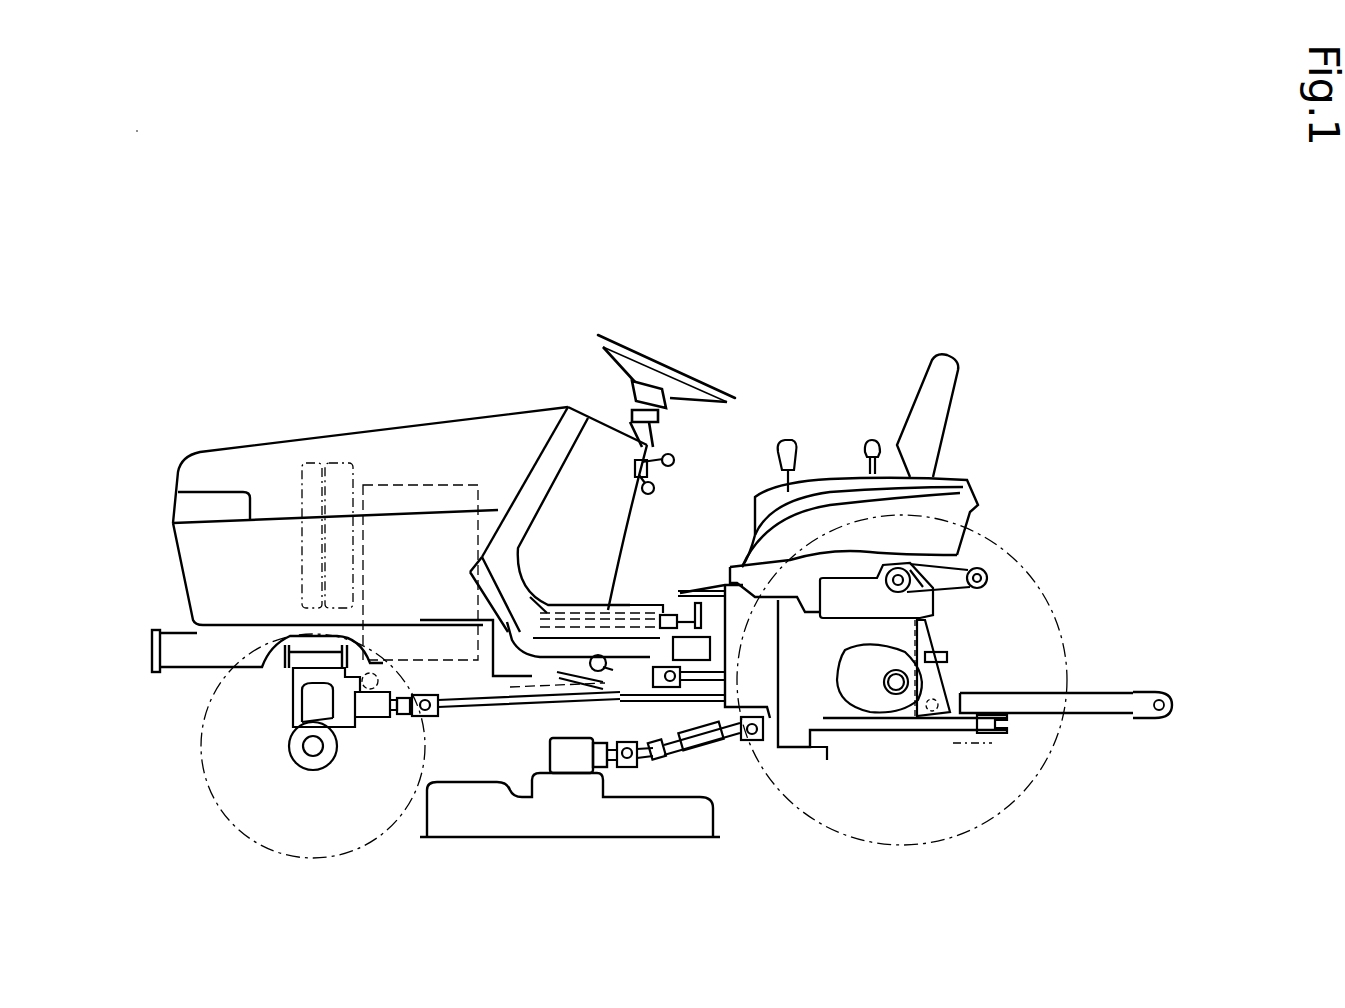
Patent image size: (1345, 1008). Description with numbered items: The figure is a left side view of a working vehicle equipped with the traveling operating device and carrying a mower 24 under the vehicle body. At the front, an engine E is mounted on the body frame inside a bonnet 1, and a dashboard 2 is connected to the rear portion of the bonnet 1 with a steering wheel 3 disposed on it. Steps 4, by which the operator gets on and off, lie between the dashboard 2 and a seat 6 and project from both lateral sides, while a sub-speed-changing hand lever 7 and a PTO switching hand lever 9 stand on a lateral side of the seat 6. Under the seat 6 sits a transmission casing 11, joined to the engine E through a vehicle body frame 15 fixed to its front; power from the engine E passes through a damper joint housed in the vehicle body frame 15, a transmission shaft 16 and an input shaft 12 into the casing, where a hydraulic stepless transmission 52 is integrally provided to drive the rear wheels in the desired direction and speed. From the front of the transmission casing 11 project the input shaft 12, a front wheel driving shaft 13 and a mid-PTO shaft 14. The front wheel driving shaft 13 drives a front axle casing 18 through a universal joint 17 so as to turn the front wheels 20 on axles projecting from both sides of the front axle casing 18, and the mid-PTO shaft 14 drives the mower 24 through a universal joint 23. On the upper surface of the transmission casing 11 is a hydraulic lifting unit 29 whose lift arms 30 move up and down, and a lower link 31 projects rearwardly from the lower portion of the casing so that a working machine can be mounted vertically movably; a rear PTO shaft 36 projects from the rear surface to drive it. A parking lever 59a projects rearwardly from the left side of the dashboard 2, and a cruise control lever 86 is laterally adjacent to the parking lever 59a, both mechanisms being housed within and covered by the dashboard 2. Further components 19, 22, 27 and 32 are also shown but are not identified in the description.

The bonnet 1 is at (265, 446).
The engine E is at (415, 485).
The dashboard 2 is at (603, 433).
The steering wheel 3 is at (657, 357).
The parking lever 59a is at (674, 459).
The cruise control lever 86 is at (653, 494).
The sub-speed-changing hand lever 7 is at (788, 437).
The PTO switching hand lever 9 is at (873, 440).
The seat 6 is at (948, 355).
The vehicle body frame 15 is at (622, 697).
The steps 4 is at (665, 680).
The input shaft 12 is at (697, 588).
The transmission shaft 16 is at (626, 604).
The front wheel driving shaft 13 is at (707, 703).
The hydraulic stepless transmission 52 is at (772, 672).
The transmission casing 11 is at (828, 762).
The hydraulic lifting unit 29 is at (918, 613).
The lift arms 30 is at (966, 566).
The pivot shaft 27 is at (893, 690).
The rear PTO shaft 36 is at (948, 657).
The fork end 32 is at (1000, 740).
The lower link 31 is at (1105, 691).
The front wheels 20 is at (230, 828).
The front axle casing 18 is at (293, 695).
The knuckle arm 22 is at (344, 765).
The tie rod end 19 is at (407, 720).
The universal joint 17 is at (445, 712).
The universal joint 23 is at (689, 745).
The mid-PTO shaft 14 is at (763, 745).
The mower 24 is at (486, 857).